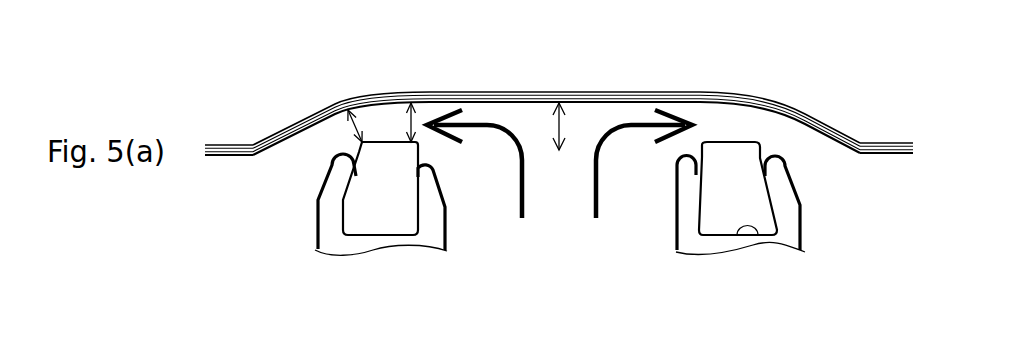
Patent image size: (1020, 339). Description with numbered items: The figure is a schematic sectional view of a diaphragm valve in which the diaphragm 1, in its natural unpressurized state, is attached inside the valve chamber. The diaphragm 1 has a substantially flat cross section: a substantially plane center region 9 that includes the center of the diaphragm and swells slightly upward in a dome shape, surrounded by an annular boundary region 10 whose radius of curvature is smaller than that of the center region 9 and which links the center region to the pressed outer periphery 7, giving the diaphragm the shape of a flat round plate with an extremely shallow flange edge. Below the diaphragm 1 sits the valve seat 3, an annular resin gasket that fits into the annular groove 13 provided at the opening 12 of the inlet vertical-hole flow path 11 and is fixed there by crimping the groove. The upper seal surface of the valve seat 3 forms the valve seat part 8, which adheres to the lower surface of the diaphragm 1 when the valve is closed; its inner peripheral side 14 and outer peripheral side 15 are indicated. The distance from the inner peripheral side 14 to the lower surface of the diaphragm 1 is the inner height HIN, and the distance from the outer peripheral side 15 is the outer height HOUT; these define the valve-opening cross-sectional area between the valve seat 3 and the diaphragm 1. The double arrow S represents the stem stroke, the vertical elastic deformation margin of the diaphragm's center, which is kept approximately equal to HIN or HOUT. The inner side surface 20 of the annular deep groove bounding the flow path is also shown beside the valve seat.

The diaphragm 1 is at (559, 91).
The valve seat 3 is at (388, 202).
The outer periphery 7 is at (892, 143).
The valve seat part 8 is at (733, 140).
The center region 9 is at (547, 90).
The boundary region 10 is at (336, 99).
The inlet vertical-hole flow path 11 is at (676, 212).
The opening 12 is at (690, 155).
The annular groove 13 is at (756, 237).
The inner peripheral side 14 is at (447, 170).
The outer peripheral side 15 is at (345, 155).
The inner side surface 20 is at (801, 220).
The stem stroke S is at (563, 130).
The inner height HIN is at (413, 126).
The outer height HOUT is at (347, 127).